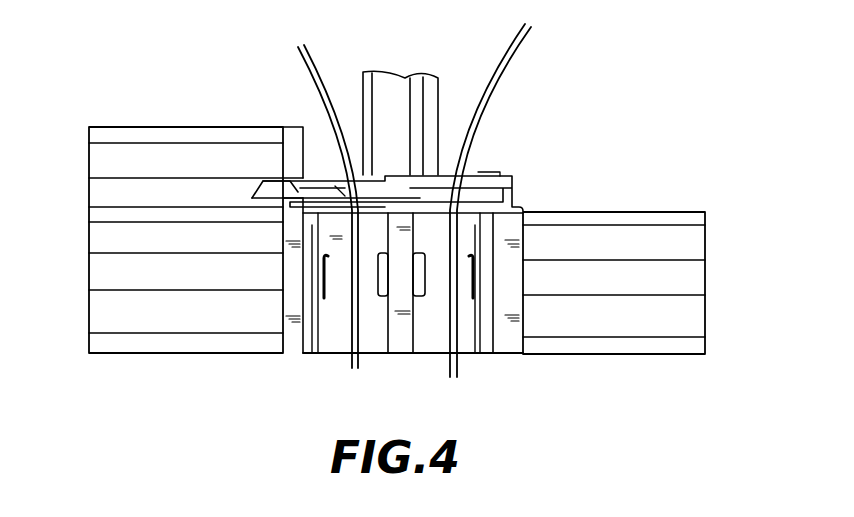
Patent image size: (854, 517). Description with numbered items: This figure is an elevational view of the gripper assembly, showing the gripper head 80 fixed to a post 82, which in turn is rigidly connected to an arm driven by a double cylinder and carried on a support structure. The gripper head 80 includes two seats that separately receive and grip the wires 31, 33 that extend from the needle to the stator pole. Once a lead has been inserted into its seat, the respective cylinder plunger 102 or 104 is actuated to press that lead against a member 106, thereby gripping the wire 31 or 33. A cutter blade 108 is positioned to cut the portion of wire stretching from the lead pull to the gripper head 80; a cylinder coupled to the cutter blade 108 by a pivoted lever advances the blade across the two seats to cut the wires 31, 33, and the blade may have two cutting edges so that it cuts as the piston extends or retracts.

The wire 31 is at (308, 49).
The wire 33 is at (507, 57).
The gripper head 80 is at (545, 189).
The post 82 is at (430, 103).
The cylinder plunger 102 is at (323, 290).
The cylinder plunger 104 is at (474, 292).
The member 106 is at (402, 338).
The cutter blade 108 is at (270, 187).